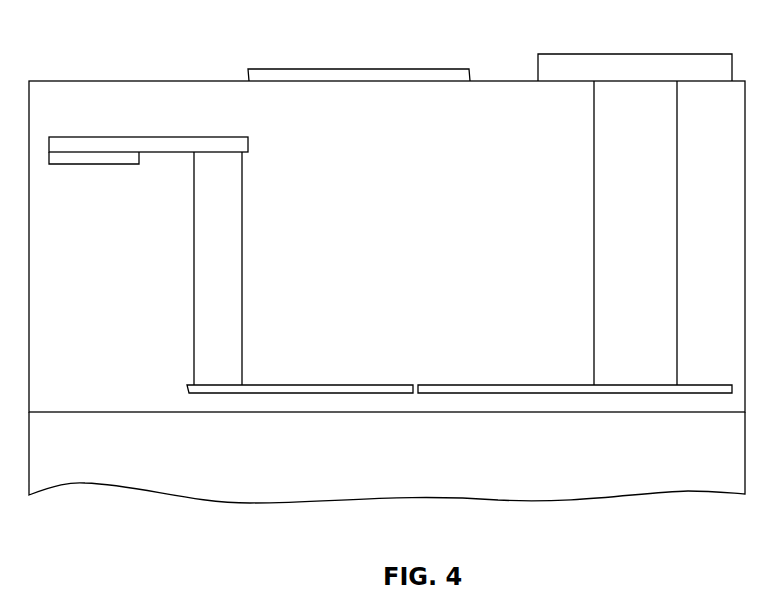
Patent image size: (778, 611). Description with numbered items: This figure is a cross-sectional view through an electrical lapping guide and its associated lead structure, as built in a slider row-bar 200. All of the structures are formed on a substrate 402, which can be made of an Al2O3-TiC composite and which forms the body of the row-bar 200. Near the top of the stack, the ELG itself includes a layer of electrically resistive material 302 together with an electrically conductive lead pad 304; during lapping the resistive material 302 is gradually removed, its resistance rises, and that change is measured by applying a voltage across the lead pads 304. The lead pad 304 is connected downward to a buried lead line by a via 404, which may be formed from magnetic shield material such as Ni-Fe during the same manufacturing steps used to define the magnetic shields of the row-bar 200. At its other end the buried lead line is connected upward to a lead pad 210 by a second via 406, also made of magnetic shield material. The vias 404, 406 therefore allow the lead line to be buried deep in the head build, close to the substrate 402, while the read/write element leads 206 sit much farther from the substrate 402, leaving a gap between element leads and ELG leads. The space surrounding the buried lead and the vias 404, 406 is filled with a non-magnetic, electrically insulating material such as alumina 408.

The slider row-bar 200 is at (235, 81).
The read/write element leads 206 is at (337, 69).
The lead pad 210 is at (607, 69).
The electrically resistive material 302 is at (101, 157).
The lead pad 304 is at (92, 144).
The substrate 402 is at (428, 453).
The via 404 is at (201, 284).
The second via 406 is at (622, 248).
The alumina 408 is at (452, 180).